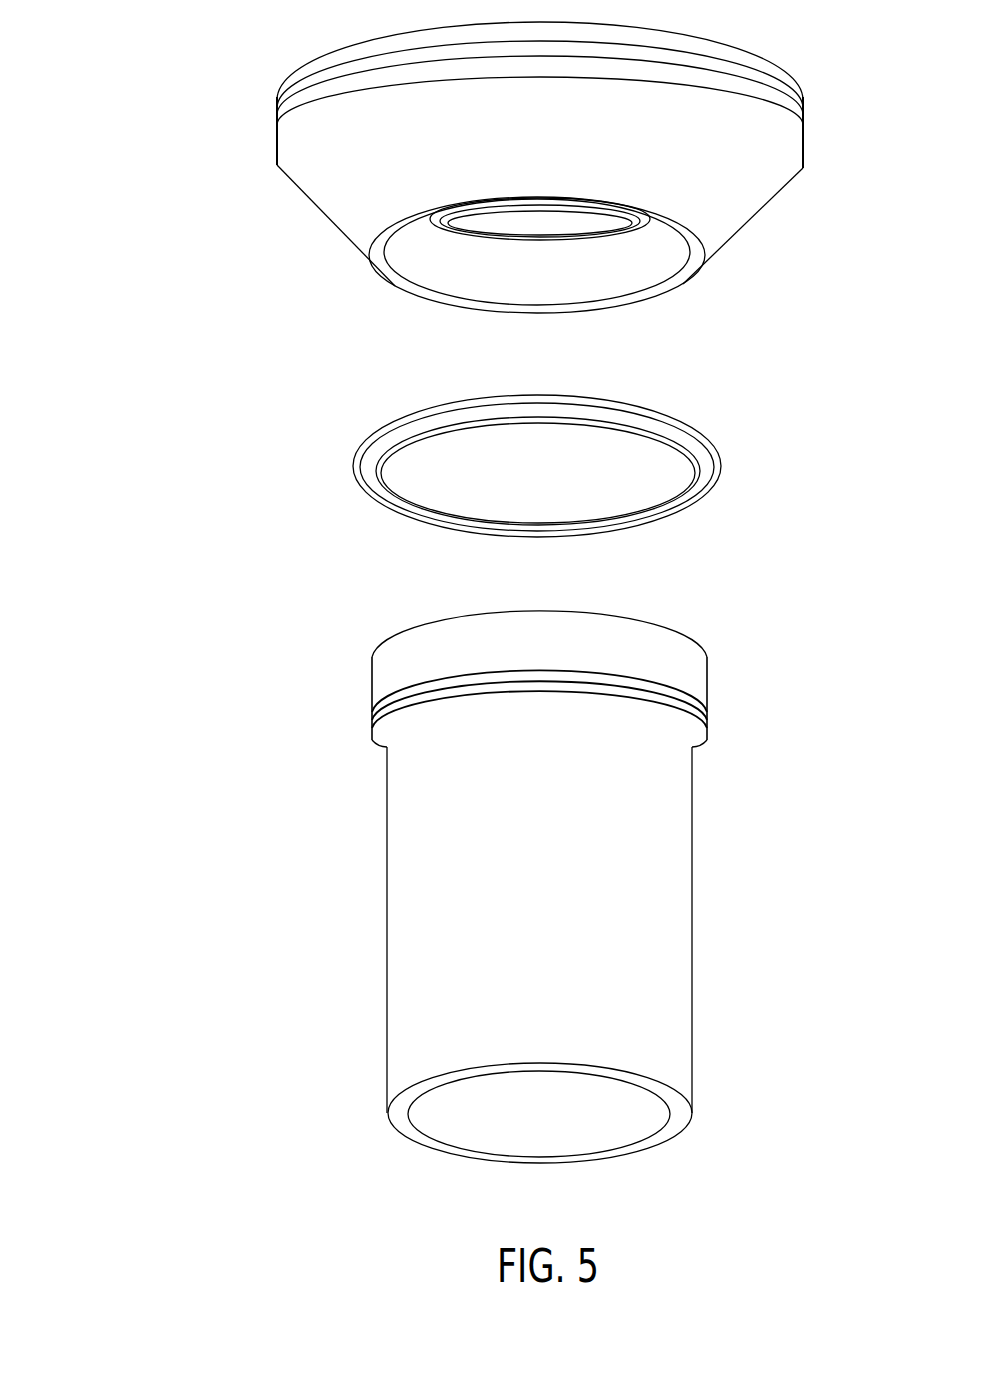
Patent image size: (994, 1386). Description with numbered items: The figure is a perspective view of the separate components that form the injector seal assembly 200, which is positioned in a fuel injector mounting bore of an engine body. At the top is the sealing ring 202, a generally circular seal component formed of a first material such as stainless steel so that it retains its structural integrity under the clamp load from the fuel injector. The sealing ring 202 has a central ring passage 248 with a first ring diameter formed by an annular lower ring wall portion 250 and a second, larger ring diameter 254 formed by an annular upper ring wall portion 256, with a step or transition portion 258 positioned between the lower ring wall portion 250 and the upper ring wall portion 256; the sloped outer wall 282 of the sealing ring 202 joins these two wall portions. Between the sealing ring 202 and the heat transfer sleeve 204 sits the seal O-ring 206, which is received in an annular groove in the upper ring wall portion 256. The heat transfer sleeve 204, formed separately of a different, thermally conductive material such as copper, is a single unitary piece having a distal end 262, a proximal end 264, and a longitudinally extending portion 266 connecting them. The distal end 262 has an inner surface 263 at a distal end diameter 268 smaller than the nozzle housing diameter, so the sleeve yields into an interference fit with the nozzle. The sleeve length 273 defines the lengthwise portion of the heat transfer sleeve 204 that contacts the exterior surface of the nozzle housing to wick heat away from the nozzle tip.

The injector seal assembly 200 is at (152, 146).
The sealing ring 202 is at (572, 178).
The heat transfer sleeve 204 is at (436, 906).
The seal O-ring 206 is at (722, 460).
The central ring passage 248 is at (450, 290).
The lower ring wall portion 250 is at (612, 293).
The second ring diameter 254 is at (525, 145).
The upper ring wall portion 256 is at (803, 104).
The transition portion 258 is at (543, 228).
The distal end 262 is at (693, 1053).
The inner surface 263 is at (490, 1138).
The proximal end 264 is at (707, 675).
The longitudinally extending portion 266 is at (386, 935).
The distal end diameter 268 is at (408, 1120).
The sleeve length 273 is at (583, 608).
The sloped lid wall 282 is at (735, 243).